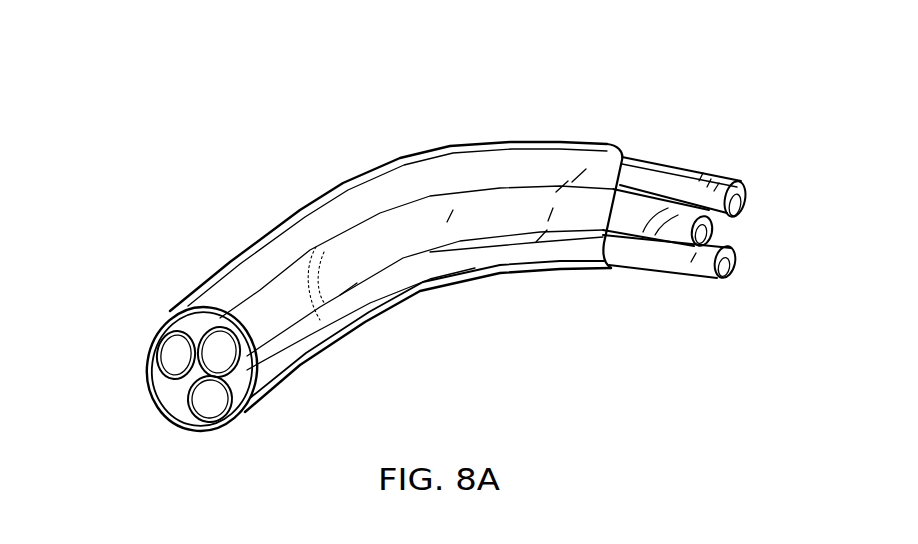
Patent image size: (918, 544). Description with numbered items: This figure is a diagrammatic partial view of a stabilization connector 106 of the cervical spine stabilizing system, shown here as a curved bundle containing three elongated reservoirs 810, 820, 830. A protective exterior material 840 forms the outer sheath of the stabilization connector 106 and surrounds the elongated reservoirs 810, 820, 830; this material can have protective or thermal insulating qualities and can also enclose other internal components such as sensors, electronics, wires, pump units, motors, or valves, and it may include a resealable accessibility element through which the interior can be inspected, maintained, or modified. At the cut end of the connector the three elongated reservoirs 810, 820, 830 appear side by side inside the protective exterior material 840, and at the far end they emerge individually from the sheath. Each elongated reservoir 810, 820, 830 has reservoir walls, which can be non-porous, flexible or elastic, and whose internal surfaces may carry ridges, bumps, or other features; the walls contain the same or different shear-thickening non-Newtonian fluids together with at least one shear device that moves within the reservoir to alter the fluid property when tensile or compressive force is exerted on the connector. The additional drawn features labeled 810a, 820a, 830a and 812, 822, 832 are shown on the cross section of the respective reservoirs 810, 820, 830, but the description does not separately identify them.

The stabilization connector 106 is at (275, 178).
The elongated reservoir 810 is at (384, 125).
The first tube lumen 810a is at (158, 378).
The first tube wall 812 is at (185, 327).
The elongated reservoir 820 is at (463, 138).
The second tube lumen 820a is at (222, 356).
The second tube wall 822 is at (212, 288).
The elongated reservoir 830 is at (481, 268).
The third tube lumen 830a is at (213, 407).
The third tube wall 832 is at (239, 397).
The protective exterior material 840 is at (165, 312).